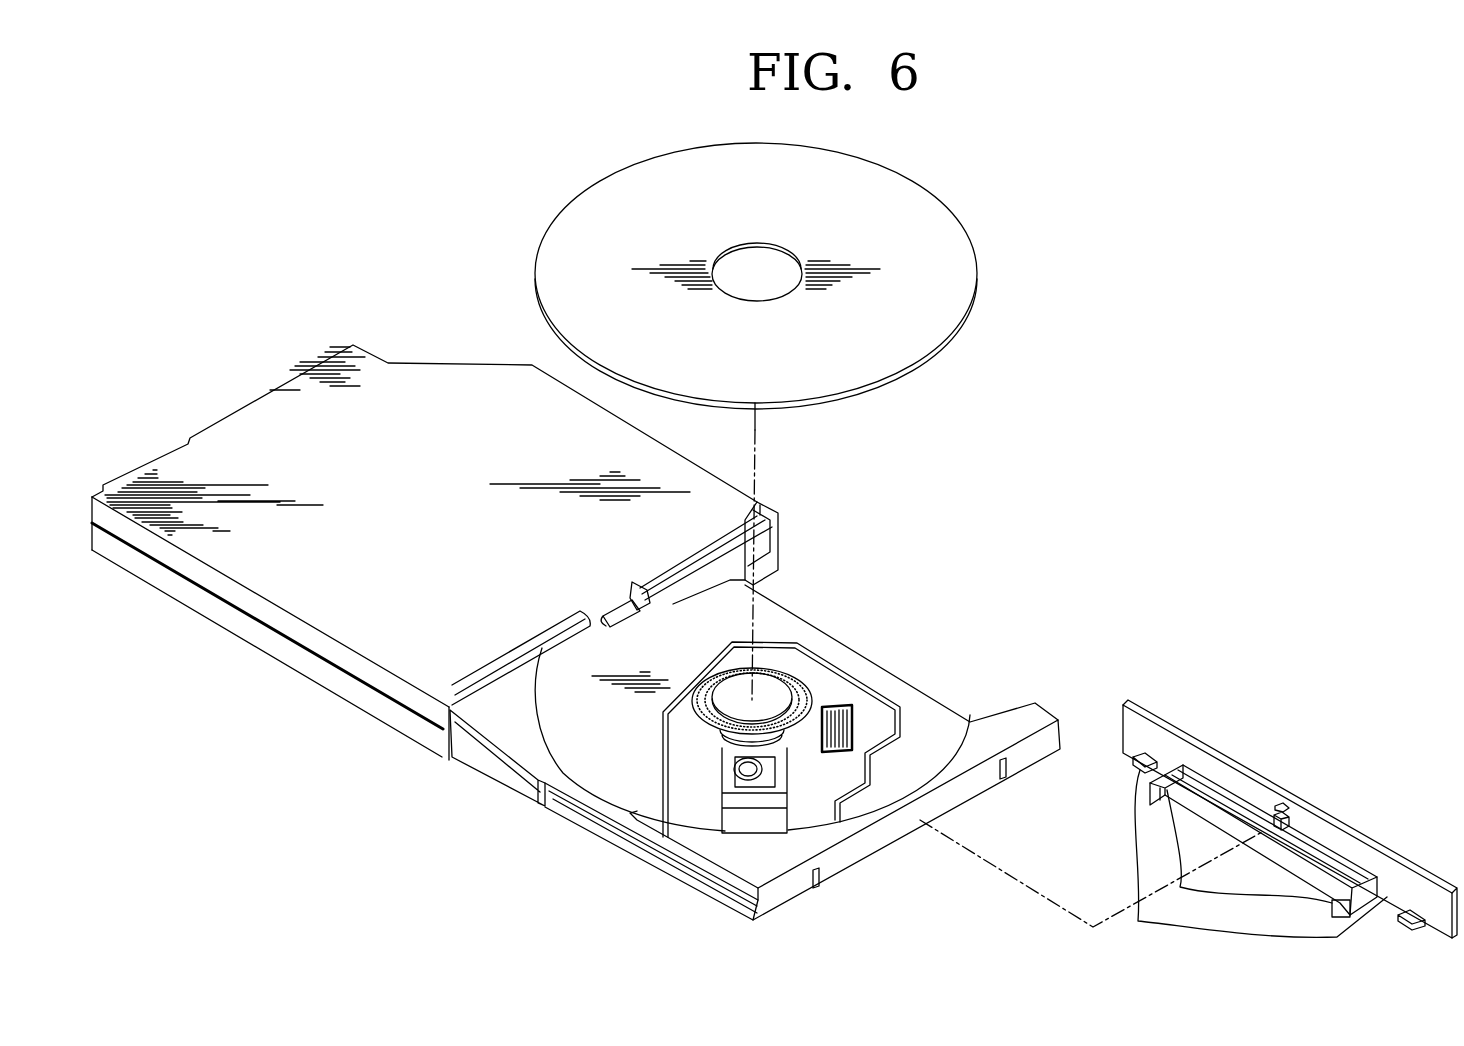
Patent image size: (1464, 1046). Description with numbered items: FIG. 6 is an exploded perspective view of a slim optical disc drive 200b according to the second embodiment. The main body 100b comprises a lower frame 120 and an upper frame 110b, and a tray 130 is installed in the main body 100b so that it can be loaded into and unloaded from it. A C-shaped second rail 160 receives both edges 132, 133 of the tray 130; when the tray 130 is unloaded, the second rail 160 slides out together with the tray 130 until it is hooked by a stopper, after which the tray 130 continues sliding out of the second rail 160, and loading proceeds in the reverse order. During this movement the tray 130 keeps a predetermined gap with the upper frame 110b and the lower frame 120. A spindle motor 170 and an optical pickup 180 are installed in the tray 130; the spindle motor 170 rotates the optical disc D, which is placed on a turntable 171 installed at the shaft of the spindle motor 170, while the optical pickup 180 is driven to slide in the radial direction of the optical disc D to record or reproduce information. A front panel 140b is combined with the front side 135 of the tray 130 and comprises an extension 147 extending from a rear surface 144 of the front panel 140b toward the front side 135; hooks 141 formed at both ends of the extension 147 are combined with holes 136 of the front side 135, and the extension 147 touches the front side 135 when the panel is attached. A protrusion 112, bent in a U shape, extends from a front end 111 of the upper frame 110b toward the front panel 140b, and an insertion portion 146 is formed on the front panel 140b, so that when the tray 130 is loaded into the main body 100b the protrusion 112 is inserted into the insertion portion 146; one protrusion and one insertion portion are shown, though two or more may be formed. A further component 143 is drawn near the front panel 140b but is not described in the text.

The optical disc drive 200b is at (447, 194).
The optical disc D is at (906, 218).
The main body 100b is at (222, 410).
The upper frame 110b is at (193, 568).
The lower frame 120 is at (200, 600).
The front end of the upper frame 111 is at (760, 503).
The protrusion 112 is at (612, 612).
The second rail 160 is at (503, 762).
The edge of the tray 132 is at (565, 812).
The tray 130 is at (576, 853).
The optical pickup 180 is at (744, 759).
The front side of the tray 135 is at (787, 894).
The holes 136 is at (818, 878).
The turntable 171 is at (793, 673).
The spindle motor 170 is at (812, 697).
The edge of the tray 133 is at (893, 672).
The front panel 140b is at (1198, 720).
The insertion portion 146 is at (1270, 805).
The extension 147 is at (1313, 848).
The rear surface of the front panel 144 is at (1402, 893).
The hooks 141 is at (1091, 840).
The elastic member 143 is at (1248, 861).